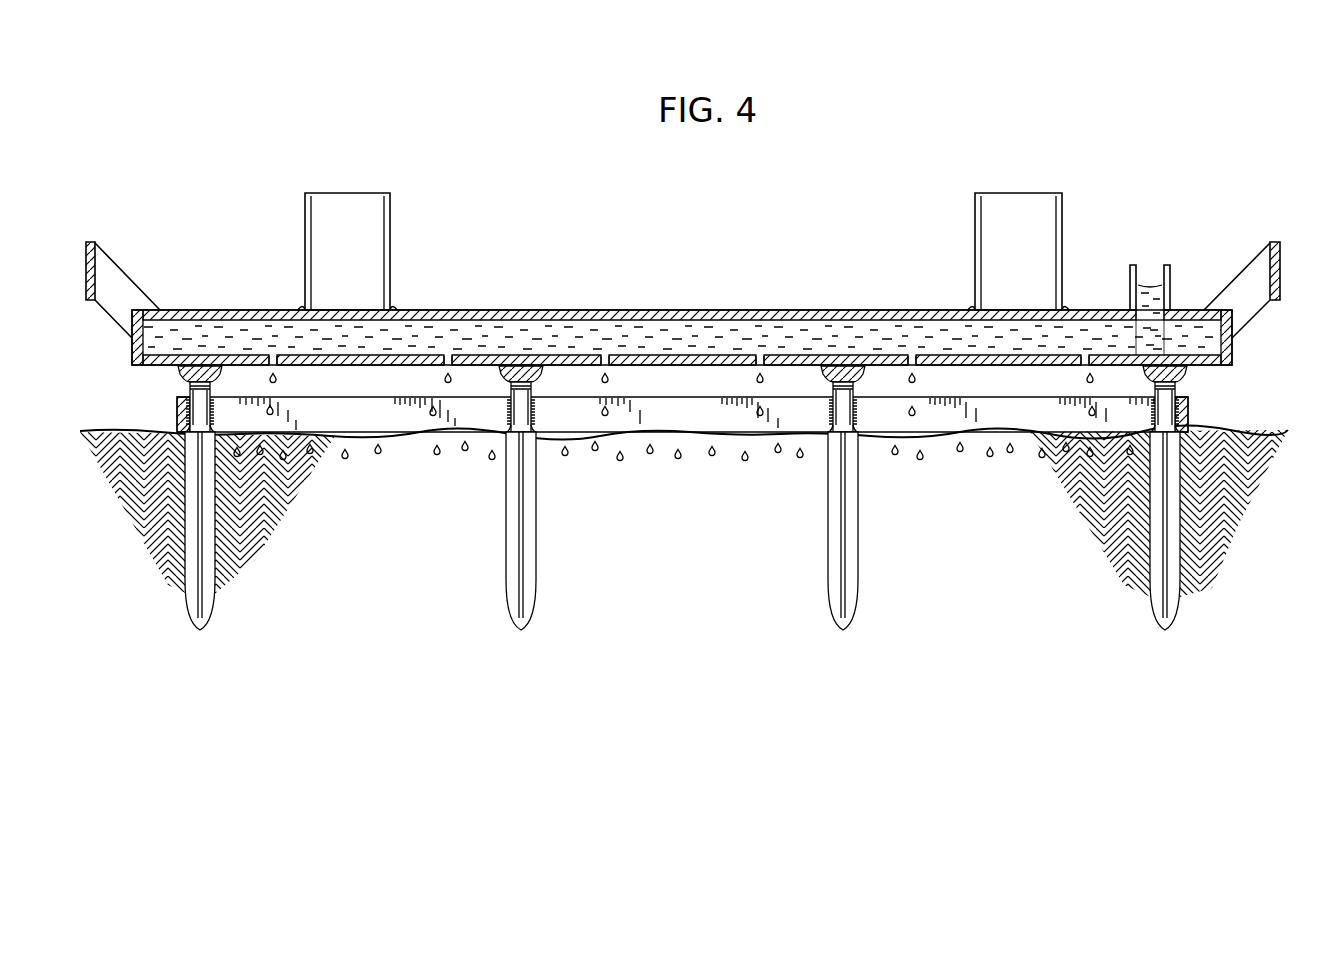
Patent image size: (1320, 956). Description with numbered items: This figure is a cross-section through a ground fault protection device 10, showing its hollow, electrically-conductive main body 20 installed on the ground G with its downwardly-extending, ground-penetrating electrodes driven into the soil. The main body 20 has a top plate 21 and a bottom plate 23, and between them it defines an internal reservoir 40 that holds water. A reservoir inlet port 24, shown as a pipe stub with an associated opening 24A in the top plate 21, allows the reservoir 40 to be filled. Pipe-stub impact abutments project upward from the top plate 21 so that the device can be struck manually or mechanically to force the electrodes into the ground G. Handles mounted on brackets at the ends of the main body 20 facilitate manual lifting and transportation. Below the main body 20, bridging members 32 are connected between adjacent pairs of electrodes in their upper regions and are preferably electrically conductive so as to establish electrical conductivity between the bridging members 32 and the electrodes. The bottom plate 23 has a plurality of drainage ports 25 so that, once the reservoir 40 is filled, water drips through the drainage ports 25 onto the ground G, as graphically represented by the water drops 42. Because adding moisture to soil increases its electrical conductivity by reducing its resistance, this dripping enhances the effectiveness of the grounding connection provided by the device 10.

The ground fault protection device 10 is at (682, 302).
The main body 20 is at (682, 369).
The top plate 21 is at (545, 310).
The bottom plate 23 is at (1023, 367).
The reservoir inlet port 24 is at (1191, 293).
The opening 24A is at (1155, 320).
The drainage ports 25 is at (912, 352).
The bridging members 32 is at (178, 412).
The internal reservoir 40 is at (692, 340).
The water drops 42 is at (756, 416).
The ground G is at (266, 488).